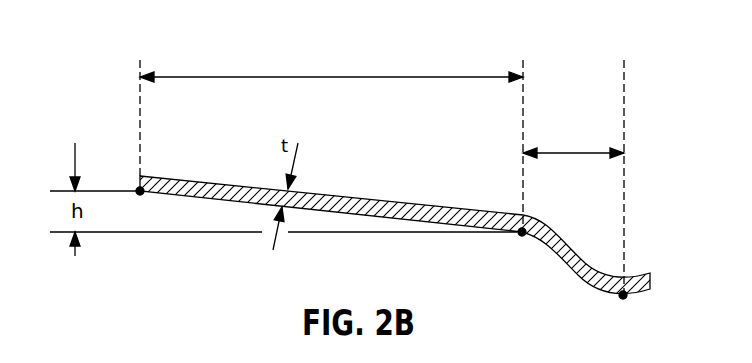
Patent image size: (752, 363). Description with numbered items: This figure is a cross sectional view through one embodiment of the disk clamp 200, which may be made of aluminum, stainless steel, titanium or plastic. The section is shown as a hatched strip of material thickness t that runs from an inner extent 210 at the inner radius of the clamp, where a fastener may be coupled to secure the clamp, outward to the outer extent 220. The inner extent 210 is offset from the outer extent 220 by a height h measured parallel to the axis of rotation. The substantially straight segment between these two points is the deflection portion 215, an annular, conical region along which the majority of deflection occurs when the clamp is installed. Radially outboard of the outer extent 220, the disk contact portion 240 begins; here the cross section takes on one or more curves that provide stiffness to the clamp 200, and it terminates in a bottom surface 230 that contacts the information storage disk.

The disk clamp 200 is at (412, 166).
The inner extent 210 is at (139, 191).
The deflection portion 215 is at (330, 77).
The outer extent 220 is at (521, 235).
The bottom surface 230 is at (624, 297).
The disk contact portion 240 is at (567, 153).